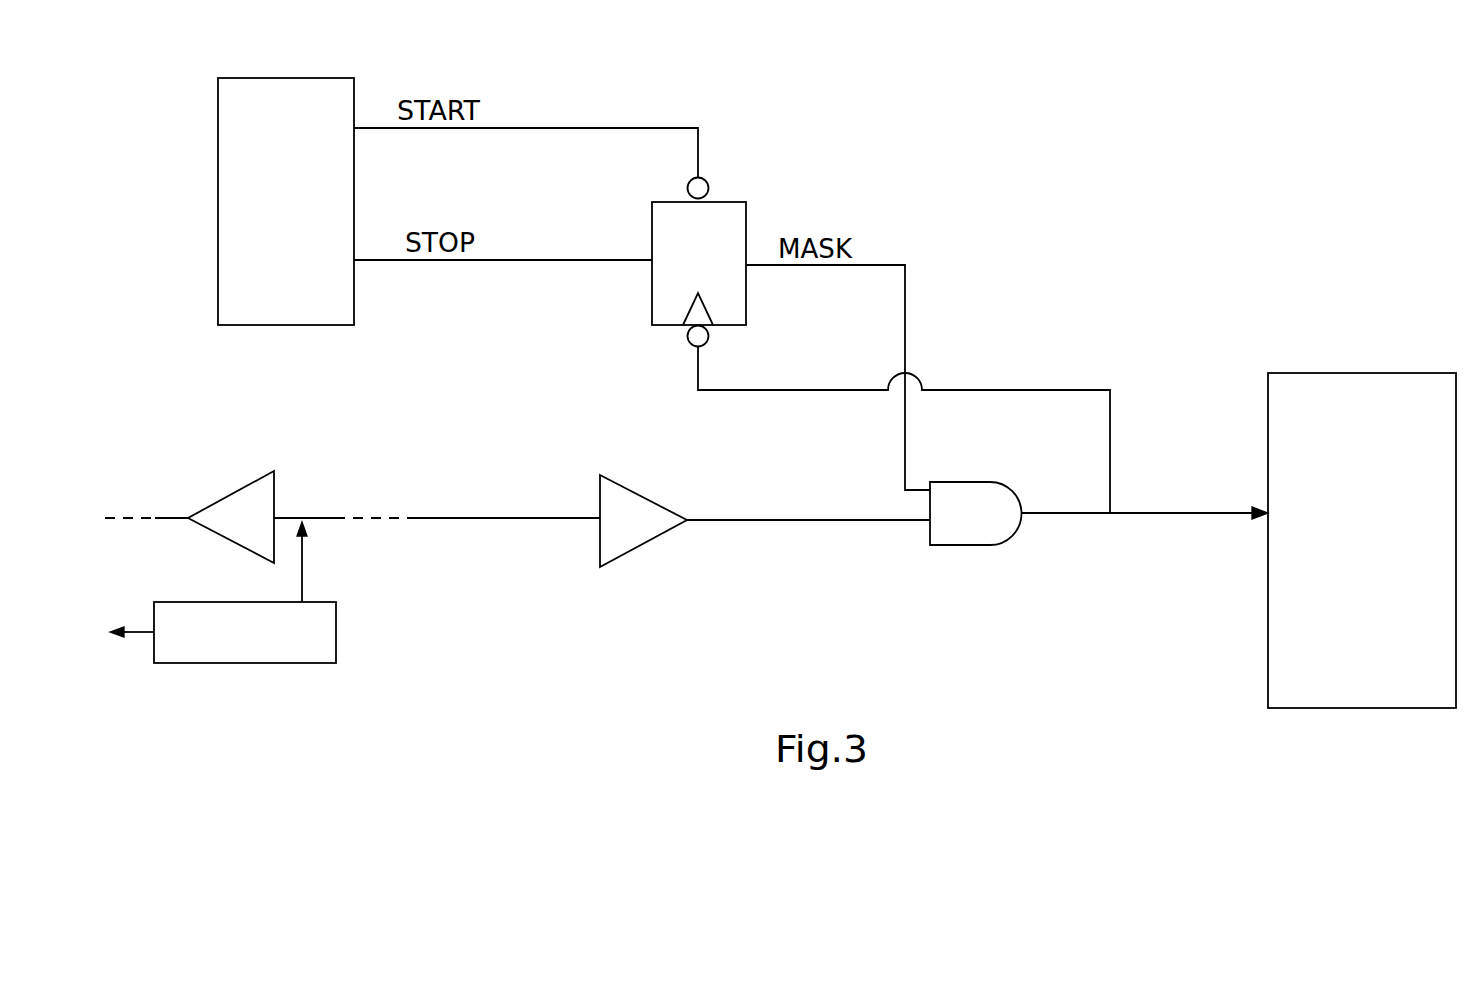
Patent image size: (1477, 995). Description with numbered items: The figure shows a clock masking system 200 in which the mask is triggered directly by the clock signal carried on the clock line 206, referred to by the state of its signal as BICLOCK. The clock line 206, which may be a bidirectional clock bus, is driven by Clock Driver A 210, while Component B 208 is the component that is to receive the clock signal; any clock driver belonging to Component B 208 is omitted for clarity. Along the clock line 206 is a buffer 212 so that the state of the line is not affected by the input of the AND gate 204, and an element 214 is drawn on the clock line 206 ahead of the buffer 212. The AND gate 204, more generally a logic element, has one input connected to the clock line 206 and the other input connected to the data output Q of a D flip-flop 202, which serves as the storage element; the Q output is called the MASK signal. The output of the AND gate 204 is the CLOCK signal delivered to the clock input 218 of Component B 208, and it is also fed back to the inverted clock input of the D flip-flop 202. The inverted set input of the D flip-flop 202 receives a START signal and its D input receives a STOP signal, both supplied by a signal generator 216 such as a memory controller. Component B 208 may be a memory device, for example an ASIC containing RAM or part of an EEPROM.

The clock masking system 200 is at (1092, 239).
The D flip-flop 202 is at (746, 213).
The AND gate 204 is at (975, 545).
The clock line 206 is at (485, 520).
The Component B 208 is at (1315, 373).
The Clock Driver A 210 is at (336, 632).
The buffer 212 is at (660, 503).
The receiver buffer 214 is at (257, 477).
The signal generator 216 is at (354, 78).
The clock input 218 is at (1266, 505).